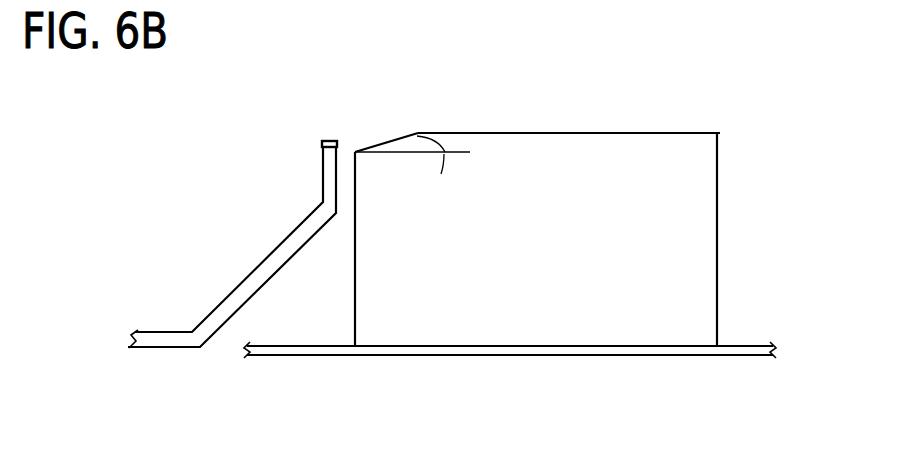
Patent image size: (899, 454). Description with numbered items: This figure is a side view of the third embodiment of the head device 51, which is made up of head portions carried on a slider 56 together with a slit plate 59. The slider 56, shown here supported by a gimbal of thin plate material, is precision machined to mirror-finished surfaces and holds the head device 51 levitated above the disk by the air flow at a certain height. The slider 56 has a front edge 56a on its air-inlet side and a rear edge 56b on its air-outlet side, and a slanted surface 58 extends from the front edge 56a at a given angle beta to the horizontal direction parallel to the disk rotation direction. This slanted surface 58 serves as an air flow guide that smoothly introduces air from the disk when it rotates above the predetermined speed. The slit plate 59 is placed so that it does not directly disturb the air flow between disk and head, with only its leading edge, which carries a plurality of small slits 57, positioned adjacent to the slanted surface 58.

The head device 51 is at (595, 195).
The slider 56 is at (523, 330).
The front edge 56a is at (359, 154).
The rear edge 56b is at (720, 133).
The slits 57 is at (327, 141).
The slanted surface 58 is at (376, 145).
The slit plate 59 is at (232, 210).